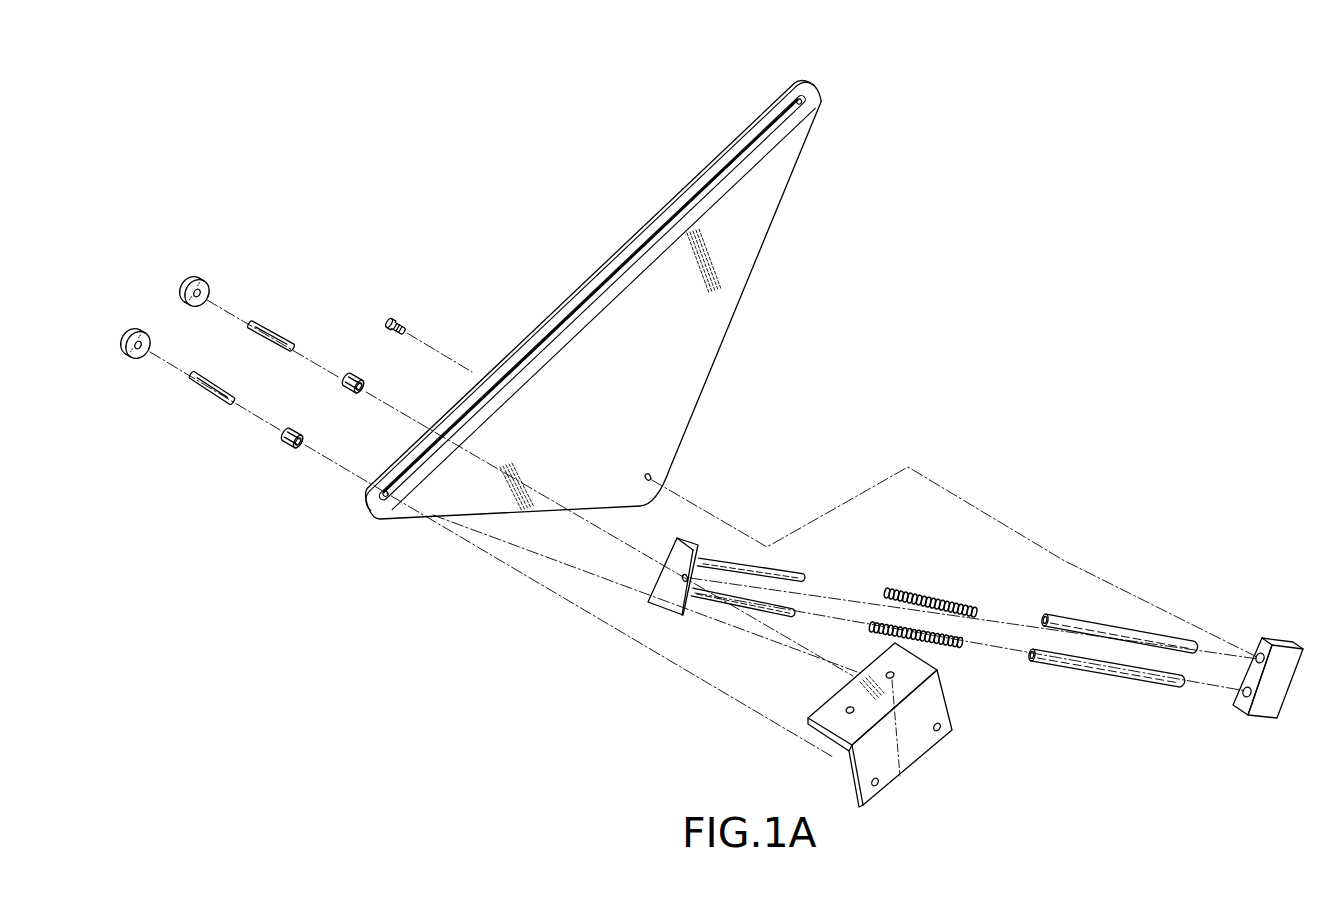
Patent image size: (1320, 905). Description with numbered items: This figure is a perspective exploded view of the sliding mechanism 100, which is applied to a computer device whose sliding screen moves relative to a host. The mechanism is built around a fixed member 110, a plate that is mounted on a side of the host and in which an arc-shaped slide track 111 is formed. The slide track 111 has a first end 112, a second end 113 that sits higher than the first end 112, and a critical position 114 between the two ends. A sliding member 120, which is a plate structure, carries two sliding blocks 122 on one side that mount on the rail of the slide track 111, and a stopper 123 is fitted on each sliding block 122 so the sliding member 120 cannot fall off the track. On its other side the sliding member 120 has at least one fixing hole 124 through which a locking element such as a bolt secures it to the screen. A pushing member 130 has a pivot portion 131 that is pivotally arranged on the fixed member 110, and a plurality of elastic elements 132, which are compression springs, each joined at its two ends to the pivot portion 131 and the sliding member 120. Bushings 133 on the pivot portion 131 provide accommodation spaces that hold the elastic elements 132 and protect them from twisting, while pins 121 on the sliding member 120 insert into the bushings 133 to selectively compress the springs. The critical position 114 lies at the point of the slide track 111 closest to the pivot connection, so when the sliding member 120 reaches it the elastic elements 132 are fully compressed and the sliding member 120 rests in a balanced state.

The sliding mechanism 100 is at (198, 147).
The fixed member 110 is at (720, 285).
The slide track 111 is at (571, 349).
The first end 112 is at (392, 517).
The second end 113 is at (824, 112).
The critical position 114 is at (597, 302).
The sliding member 120 is at (900, 728).
The pin 121 is at (757, 602).
The sliding block 122 is at (350, 373).
The stopper 123 is at (207, 285).
The fixing hole 124 is at (855, 710).
The pushing member 130 is at (1086, 699).
The pivot portion 131 is at (1265, 698).
The elastic element 132 is at (962, 648).
The bushing 133 is at (1126, 677).